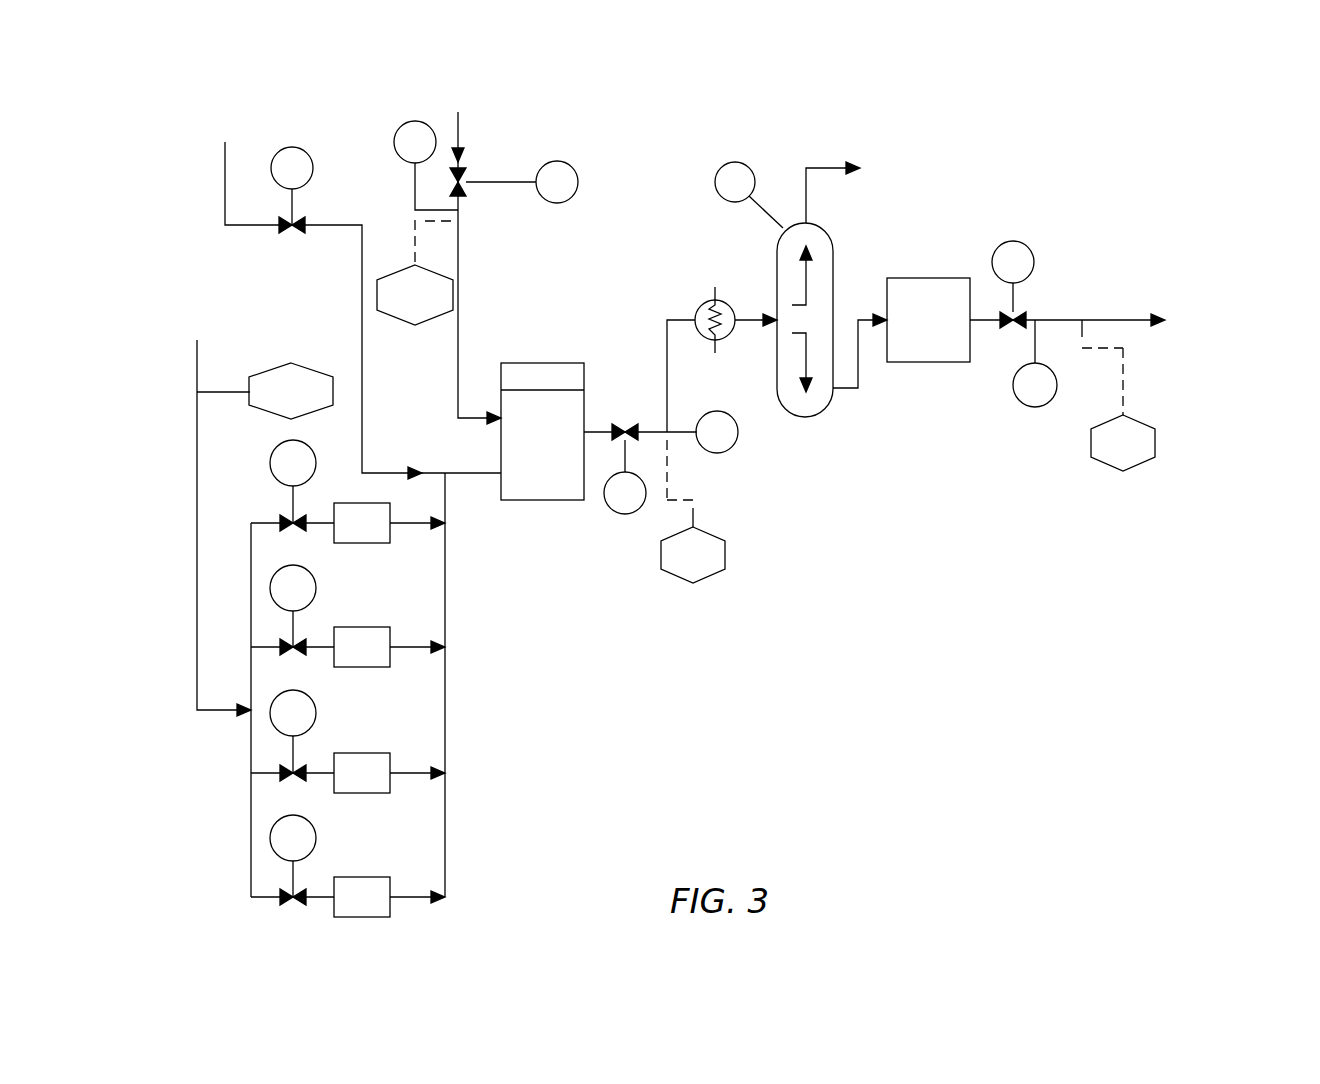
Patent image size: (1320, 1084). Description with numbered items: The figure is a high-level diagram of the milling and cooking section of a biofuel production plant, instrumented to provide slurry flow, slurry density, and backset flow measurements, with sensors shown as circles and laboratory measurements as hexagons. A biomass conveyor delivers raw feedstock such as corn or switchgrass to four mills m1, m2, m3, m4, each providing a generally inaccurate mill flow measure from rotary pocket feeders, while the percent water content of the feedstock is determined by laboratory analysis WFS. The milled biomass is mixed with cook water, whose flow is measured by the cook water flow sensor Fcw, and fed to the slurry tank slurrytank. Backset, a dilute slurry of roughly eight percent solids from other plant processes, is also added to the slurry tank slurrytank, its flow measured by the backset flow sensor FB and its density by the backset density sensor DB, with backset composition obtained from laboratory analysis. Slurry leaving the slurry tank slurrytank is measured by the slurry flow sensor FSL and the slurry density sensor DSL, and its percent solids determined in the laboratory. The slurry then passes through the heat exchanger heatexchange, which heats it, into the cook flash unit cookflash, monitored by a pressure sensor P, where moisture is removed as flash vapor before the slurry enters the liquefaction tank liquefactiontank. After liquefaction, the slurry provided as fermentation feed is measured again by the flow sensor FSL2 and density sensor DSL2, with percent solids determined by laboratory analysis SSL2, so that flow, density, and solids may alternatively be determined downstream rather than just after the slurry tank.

The cook water flow sensor Fcw is at (322, 273).
The backset flow sensor FB is at (514, 263).
The backset density sensor DB is at (417, 223).
The percent water content of feedstock laboratory measurement WFS is at (287, 582).
The first mill m1 is at (348, 491).
The second mill m2 is at (348, 616).
The third mill m3 is at (348, 741).
The fourth mill m4 is at (348, 866).
The slurry tank slurrytank is at (514, 431).
The slurry flow sensor FSL is at (620, 480).
The slurry density sensor DSL is at (710, 497).
The heat exchanger heatexchange is at (715, 337).
The cook flash unit cookflash is at (849, 302).
The pressure sensor P is at (749, 195).
The liquefaction tank liquefactiontank is at (928, 295).
The post-liquefaction slurry flow sensor FSL2 is at (1067, 284).
The post-liquefaction slurry density sensor DSL2 is at (992, 375).
The percent solids of slurry laboratory measurement SSL2 is at (1184, 395).